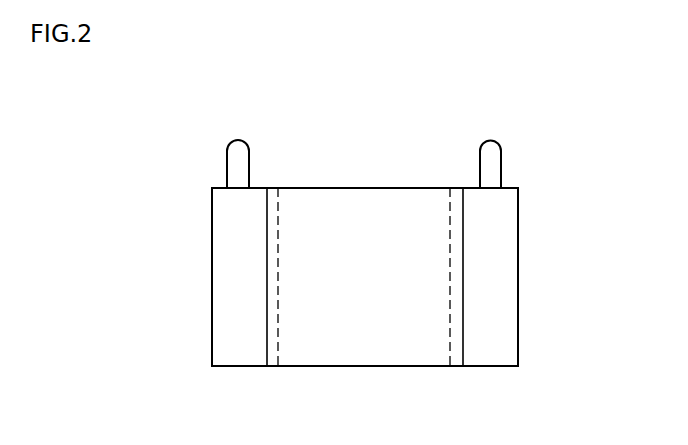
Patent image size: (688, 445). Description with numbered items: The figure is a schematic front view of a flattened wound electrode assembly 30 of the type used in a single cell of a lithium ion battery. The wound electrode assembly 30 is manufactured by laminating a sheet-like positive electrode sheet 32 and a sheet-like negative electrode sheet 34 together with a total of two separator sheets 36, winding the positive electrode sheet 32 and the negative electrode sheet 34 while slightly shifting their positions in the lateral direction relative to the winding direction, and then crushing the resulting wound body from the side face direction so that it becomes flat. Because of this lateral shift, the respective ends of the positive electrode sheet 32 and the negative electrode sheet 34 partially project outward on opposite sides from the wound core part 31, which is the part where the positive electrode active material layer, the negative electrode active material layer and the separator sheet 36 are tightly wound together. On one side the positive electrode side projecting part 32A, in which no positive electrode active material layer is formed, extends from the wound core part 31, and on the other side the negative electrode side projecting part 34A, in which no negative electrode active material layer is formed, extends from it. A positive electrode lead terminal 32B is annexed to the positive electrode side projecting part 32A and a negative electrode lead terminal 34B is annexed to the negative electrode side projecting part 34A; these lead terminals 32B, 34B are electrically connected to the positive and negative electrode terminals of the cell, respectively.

The wound electrode assembly 30 is at (431, 180).
The wound core part 31 is at (362, 352).
The positive electrode sheet 32 is at (519, 244).
The positive electrode side projecting part 32A is at (499, 328).
The positive electrode lead terminal 32B is at (501, 155).
The negative electrode sheet 34 is at (212, 246).
The negative electrode side projecting part 34A is at (220, 318).
The negative electrode lead terminal 34B is at (249, 157).
The separator sheet 36 is at (309, 198).